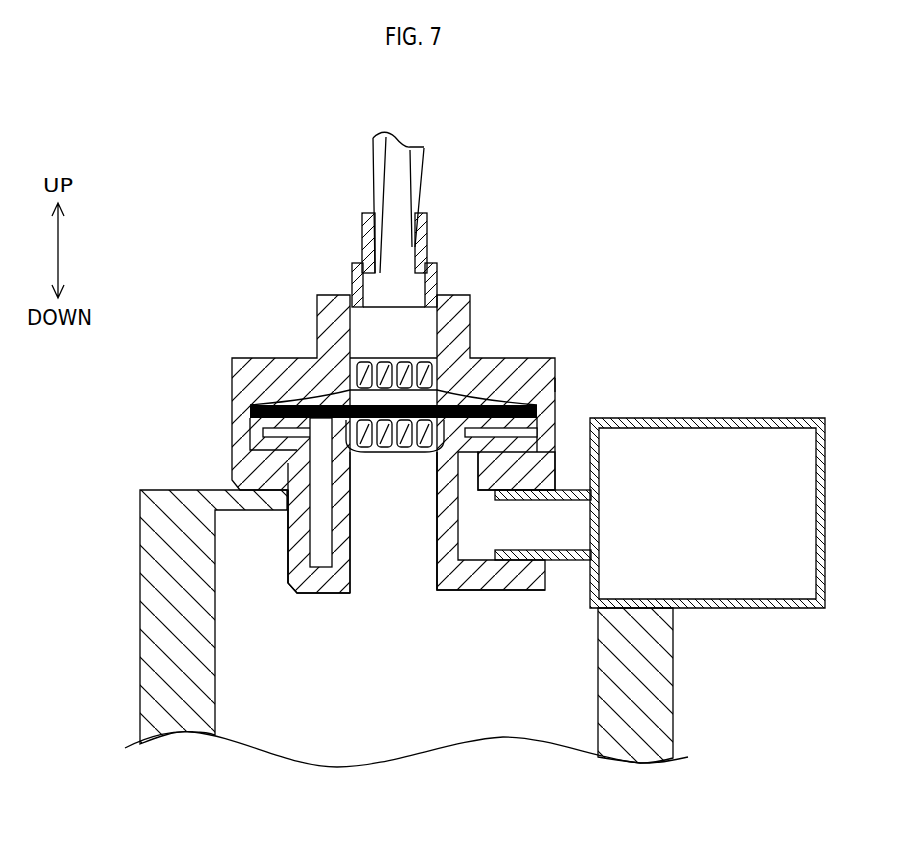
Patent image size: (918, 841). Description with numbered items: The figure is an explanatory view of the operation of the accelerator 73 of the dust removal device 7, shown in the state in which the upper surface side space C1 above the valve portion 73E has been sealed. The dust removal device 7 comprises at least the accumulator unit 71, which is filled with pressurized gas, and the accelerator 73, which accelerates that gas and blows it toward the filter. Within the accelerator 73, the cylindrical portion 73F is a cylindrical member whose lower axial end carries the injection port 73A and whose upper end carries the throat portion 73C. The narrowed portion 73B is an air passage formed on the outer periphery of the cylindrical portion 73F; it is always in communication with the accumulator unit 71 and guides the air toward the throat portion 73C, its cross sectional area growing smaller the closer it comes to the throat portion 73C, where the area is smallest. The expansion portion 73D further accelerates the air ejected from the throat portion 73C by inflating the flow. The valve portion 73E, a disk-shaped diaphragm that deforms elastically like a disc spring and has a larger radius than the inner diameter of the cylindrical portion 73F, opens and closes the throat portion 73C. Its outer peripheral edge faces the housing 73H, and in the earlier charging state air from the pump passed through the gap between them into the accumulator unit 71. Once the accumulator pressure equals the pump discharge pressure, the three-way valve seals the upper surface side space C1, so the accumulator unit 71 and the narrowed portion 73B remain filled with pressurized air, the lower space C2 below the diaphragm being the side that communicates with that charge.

The dust removal device 7 is at (632, 323).
The accumulator unit 71 is at (741, 418).
The accelerator 73 is at (513, 359).
The injection port 73A is at (393, 522).
The narrowed portion 73B is at (498, 471).
The throat portion 73C is at (407, 452).
The expansion portion 73D is at (367, 487).
The valve portion 73E is at (322, 404).
The cylindrical portion 73F is at (340, 538).
The housing 73H is at (557, 387).
The upper surface side space C1 is at (483, 388).
The lower chamber C2 is at (545, 418).